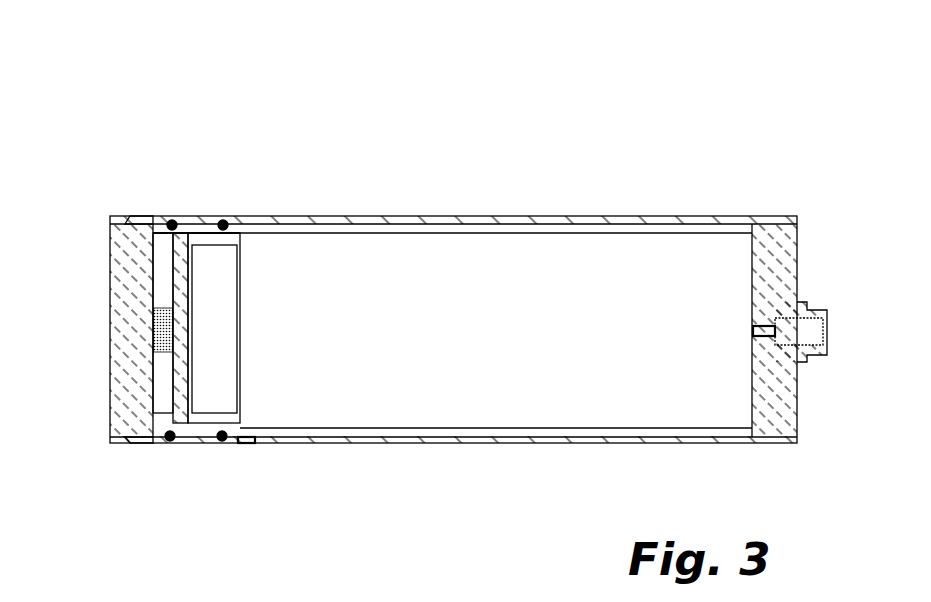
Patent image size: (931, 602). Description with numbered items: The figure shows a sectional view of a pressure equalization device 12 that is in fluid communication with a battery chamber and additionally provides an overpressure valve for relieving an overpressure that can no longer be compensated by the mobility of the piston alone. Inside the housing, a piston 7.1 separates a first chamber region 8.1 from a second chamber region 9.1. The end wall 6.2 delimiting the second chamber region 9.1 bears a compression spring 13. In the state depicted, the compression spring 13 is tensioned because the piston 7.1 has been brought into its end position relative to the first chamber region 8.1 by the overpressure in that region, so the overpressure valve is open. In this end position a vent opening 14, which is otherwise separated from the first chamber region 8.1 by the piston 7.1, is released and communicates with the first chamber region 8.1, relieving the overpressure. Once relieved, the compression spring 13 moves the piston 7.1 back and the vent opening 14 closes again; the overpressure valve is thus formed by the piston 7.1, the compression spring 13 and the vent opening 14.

The pressure equalization device 12 is at (583, 207).
The end wall 6.2 is at (106, 297).
The second chamber region 9.1 is at (163, 268).
The compression spring 13 is at (160, 356).
The piston 7.1 is at (228, 318).
The first chamber region 8.1 is at (497, 346).
The vent opening 14 is at (245, 447).